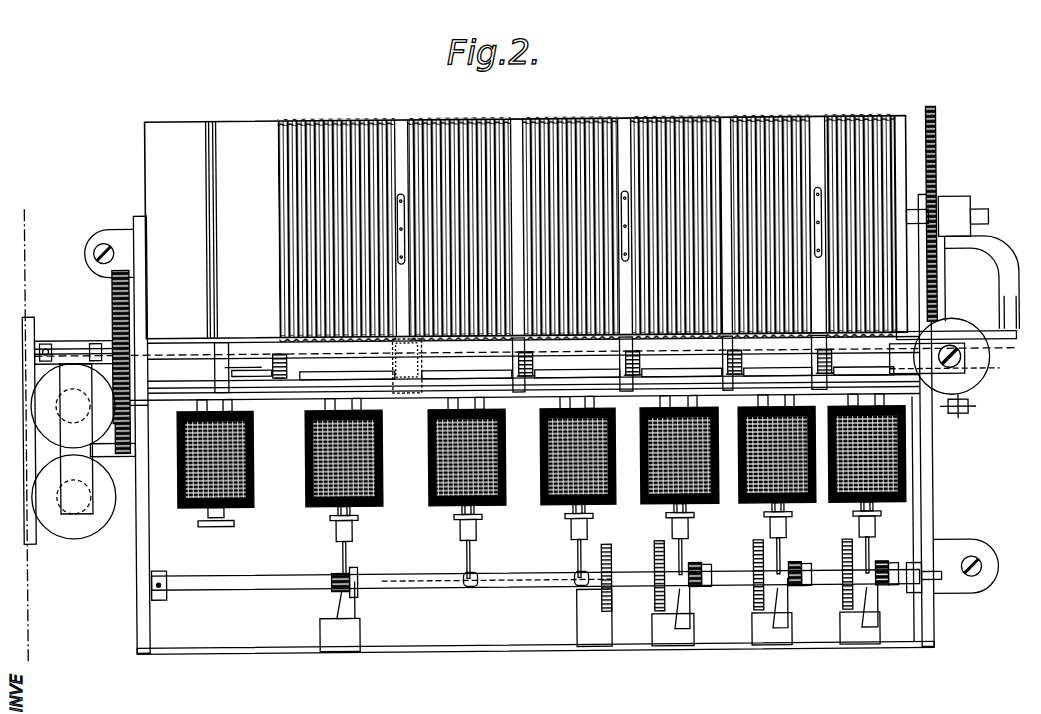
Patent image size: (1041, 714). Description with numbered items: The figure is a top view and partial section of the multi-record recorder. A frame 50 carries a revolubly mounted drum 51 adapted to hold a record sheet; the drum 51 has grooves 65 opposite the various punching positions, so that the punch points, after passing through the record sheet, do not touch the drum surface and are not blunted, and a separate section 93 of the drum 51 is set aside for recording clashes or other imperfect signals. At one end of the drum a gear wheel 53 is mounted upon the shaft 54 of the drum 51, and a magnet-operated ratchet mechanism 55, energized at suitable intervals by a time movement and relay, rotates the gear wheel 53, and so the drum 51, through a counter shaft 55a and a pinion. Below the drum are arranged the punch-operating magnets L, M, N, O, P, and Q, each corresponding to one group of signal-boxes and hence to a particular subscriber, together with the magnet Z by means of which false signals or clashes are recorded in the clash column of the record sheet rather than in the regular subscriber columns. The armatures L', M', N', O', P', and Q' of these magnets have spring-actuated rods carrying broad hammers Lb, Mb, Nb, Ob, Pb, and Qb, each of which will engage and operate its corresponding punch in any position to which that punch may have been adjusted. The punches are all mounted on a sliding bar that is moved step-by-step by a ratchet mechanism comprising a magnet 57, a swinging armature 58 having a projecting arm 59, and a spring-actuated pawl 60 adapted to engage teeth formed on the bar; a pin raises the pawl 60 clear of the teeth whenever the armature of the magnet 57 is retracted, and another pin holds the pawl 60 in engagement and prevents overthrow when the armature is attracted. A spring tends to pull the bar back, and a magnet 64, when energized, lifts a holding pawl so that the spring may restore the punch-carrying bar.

The frame 50 is at (932, 512).
The drum 51 is at (147, 157).
The separate section 93 is at (218, 214).
The grooves 65 is at (362, 125).
The gear wheel 53 is at (940, 162).
The shaft 54 is at (988, 213).
The swinging armature 58 is at (982, 283).
The magnet 57 is at (1005, 333).
The projecting arm 59 is at (986, 335).
The spring-actuated pawl 60 is at (1002, 358).
The magnet 64 is at (967, 387).
The counter shaft 55a is at (74, 340).
The magnet-operated ratchet mechanism 55 is at (48, 466).
The magnet Z is at (253, 455).
The punch-operating magnet Q is at (333, 457).
The armature Q' is at (333, 578).
The hammer Qb is at (352, 380).
The punch-operating magnet P is at (453, 461).
The armature P' is at (456, 545).
The hammer Pb is at (476, 382).
The punch-operating magnet O is at (567, 455).
The armature O' is at (574, 575).
The hammer Ob is at (592, 382).
The punch-operating magnet N is at (670, 461).
The armature N' is at (679, 574).
The hammer Nb is at (698, 382).
The punch-operating magnet M is at (766, 460).
The armature M' is at (775, 573).
The hammer Mb is at (795, 382).
The punch-operating magnet L is at (891, 447).
The armature L' is at (870, 573).
The hammer Lb is at (882, 382).